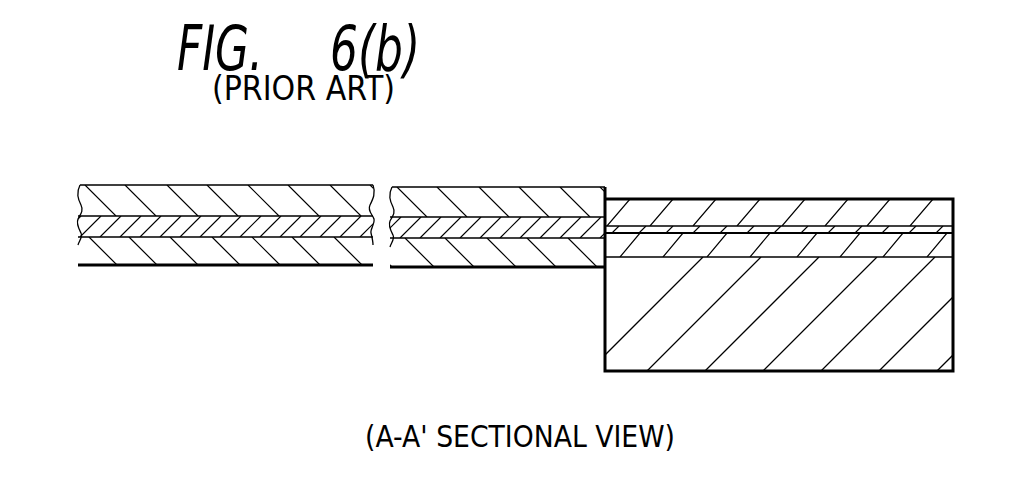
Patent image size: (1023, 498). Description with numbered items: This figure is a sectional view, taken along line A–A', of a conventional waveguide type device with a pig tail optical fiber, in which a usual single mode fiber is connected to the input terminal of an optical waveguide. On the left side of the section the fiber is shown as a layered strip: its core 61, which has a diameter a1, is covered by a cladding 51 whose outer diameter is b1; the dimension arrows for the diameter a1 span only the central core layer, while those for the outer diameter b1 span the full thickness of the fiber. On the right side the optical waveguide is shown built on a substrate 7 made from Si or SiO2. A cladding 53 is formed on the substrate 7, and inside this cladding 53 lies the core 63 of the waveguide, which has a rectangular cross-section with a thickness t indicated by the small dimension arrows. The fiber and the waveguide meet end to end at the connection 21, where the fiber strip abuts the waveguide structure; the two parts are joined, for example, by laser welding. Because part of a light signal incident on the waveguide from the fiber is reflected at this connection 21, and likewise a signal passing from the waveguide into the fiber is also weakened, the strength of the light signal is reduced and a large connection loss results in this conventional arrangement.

The core 61 is at (107, 218).
The cladding 51 is at (128, 258).
The outer diameter b1 is at (275, 317).
The connection 21 is at (588, 270).
The diameter a1 is at (512, 318).
The substrate 7 is at (872, 357).
The cladding 53 is at (760, 208).
The core 63 is at (912, 230).
The thickness t is at (673, 283).